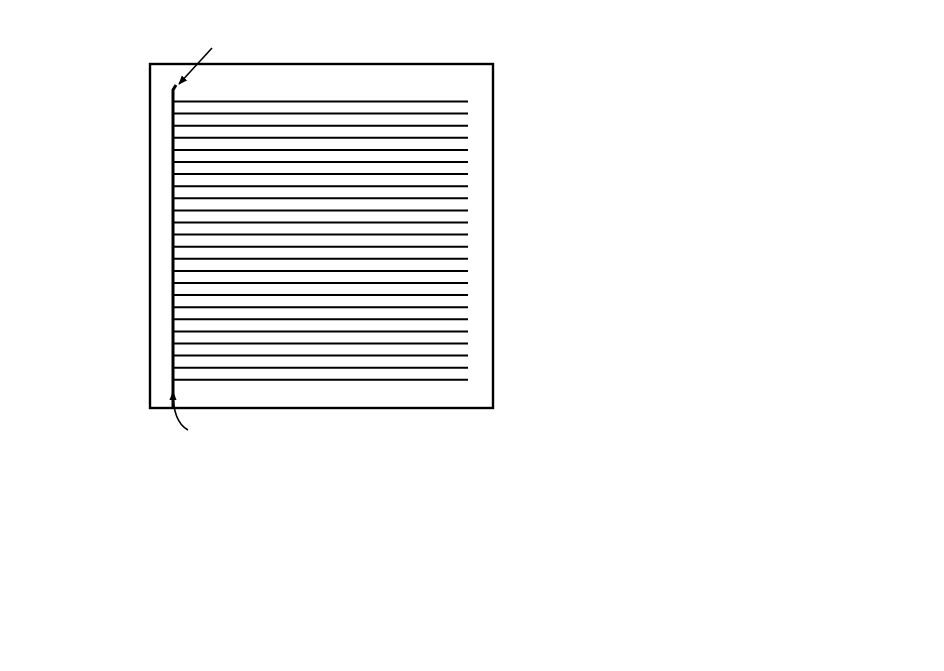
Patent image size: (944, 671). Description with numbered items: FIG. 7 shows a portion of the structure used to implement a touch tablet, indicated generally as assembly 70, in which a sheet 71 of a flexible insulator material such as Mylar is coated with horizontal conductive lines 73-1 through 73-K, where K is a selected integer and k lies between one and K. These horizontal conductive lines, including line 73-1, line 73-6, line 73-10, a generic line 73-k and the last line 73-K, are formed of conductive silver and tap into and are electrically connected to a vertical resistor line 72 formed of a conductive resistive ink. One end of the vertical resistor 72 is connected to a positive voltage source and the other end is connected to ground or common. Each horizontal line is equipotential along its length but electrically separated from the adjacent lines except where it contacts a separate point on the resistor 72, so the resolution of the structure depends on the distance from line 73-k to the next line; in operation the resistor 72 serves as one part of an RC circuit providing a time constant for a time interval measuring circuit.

The flexible insulator sheet assembly 70 is at (466, 61).
The sheet 71 is at (480, 92).
The vertical resistor line 72 is at (173, 240).
The horizontal conductive line 73-1 is at (403, 100).
The horizontal conductive line 73-6 is at (465, 162).
The horizontal conductive line 73-10 is at (465, 210).
The horizontal conductive line 73-k is at (468, 126).
The horizontal conductive line 73-K is at (457, 381).